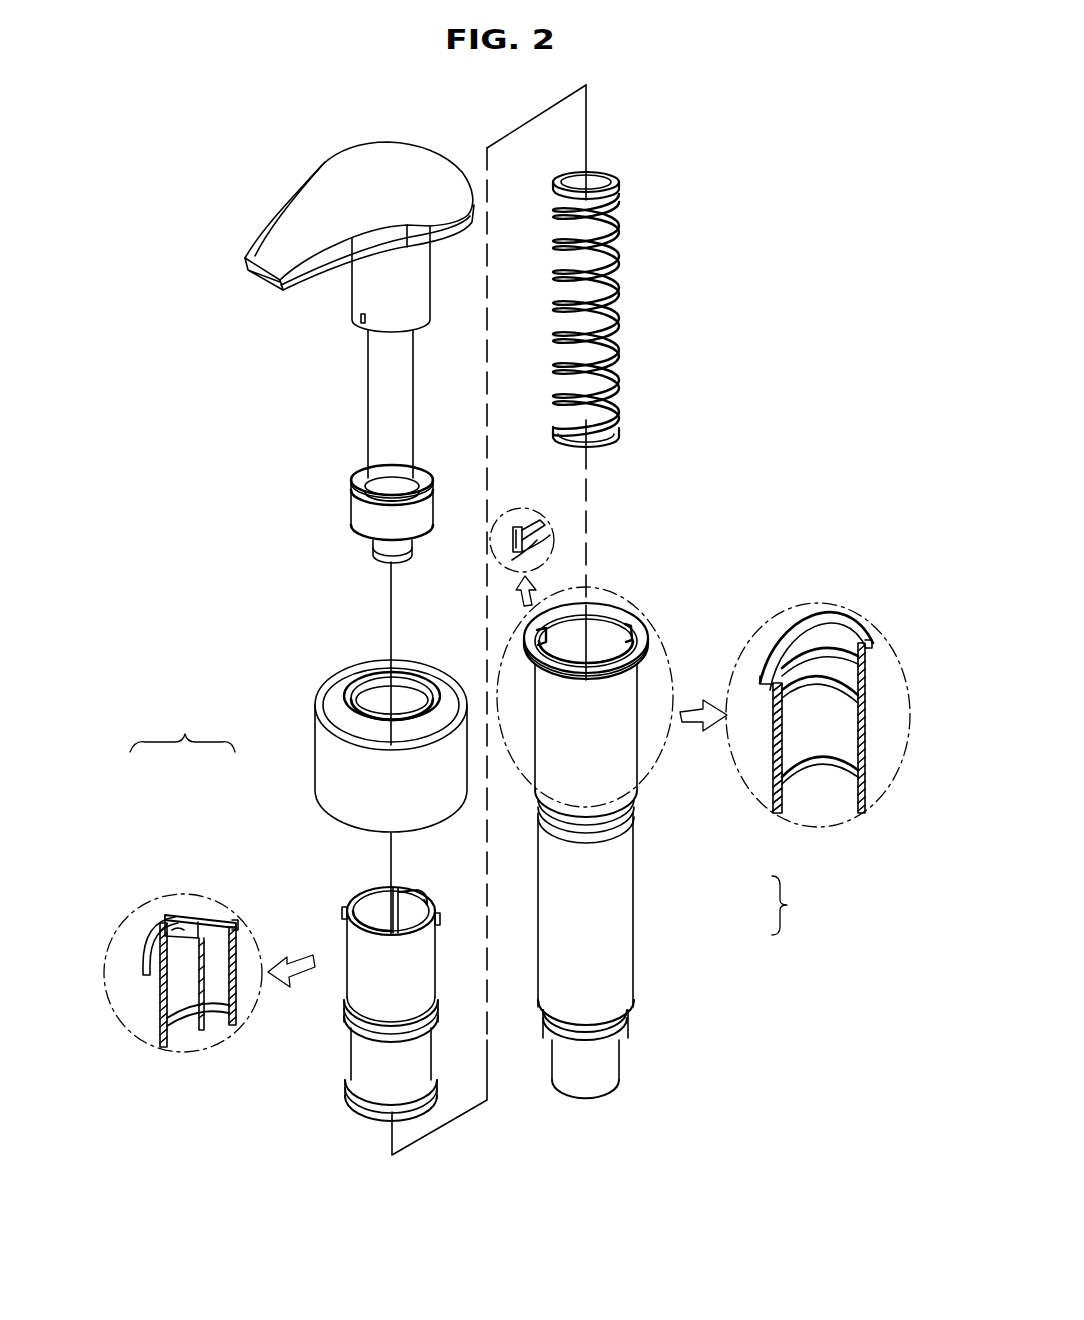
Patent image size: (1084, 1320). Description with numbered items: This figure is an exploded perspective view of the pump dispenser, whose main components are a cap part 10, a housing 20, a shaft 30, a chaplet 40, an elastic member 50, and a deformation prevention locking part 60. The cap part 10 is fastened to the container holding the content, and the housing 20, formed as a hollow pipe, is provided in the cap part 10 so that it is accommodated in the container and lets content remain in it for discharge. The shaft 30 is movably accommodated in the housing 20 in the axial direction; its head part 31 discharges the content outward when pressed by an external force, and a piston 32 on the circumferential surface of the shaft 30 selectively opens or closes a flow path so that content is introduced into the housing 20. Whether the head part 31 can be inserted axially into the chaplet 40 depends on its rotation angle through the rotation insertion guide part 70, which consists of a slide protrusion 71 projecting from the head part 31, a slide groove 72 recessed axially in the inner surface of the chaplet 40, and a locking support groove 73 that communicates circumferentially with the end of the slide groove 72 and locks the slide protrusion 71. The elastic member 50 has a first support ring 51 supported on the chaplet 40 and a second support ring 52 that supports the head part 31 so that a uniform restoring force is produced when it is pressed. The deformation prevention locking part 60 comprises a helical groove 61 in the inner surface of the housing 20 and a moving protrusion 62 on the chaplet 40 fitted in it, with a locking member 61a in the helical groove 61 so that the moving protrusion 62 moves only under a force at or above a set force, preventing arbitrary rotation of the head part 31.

The cap part 10 is at (328, 778).
The housing 20 is at (773, 636).
The shaft 30 is at (380, 410).
The head part 31 is at (355, 287).
The piston 32 is at (358, 508).
The chaplet 40 is at (150, 1015).
The elastic member 50 is at (636, 284).
The first support ring 51 is at (614, 430).
The second support ring 52 is at (612, 196).
The deformation prevention locking part 60 is at (797, 905).
The helical groove 61 is at (810, 650).
The locking member 61a is at (530, 512).
The moving protrusion 62 is at (440, 910).
The rotation insertion guide part 70 is at (182, 725).
The slide protrusion 71 is at (365, 322).
The slide groove 72 is at (392, 930).
The locking support groove 73 is at (405, 895).